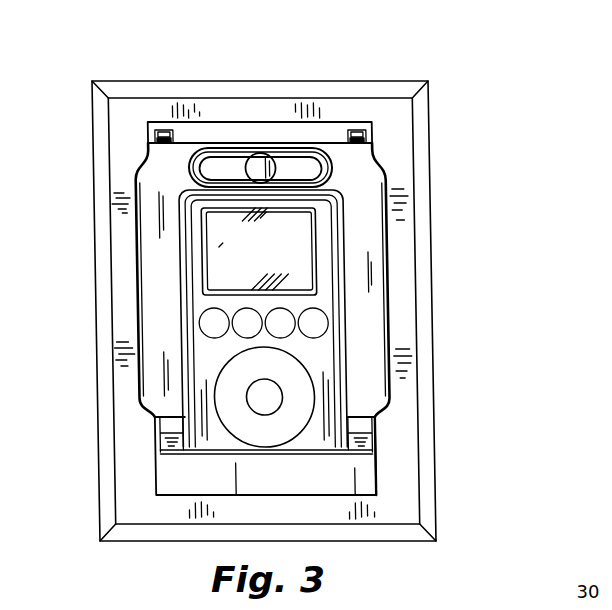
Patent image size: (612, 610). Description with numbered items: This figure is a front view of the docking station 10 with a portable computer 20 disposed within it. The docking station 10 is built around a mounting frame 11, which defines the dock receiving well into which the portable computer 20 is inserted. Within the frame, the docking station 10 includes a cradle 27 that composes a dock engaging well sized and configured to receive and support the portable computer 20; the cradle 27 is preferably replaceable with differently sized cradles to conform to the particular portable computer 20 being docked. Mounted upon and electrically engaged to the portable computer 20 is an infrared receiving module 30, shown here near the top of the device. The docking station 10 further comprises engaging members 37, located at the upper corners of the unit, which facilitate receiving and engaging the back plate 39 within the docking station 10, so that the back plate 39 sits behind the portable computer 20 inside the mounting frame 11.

The docking station 10 is at (438, 250).
The mounting frame 11 is at (105, 247).
The portable computer 20 is at (396, 293).
The cradle 27 is at (361, 445).
The infrared receiving module 30 is at (286, 148).
The engaging members 37 is at (171, 129).
The back plate 39 is at (160, 172).